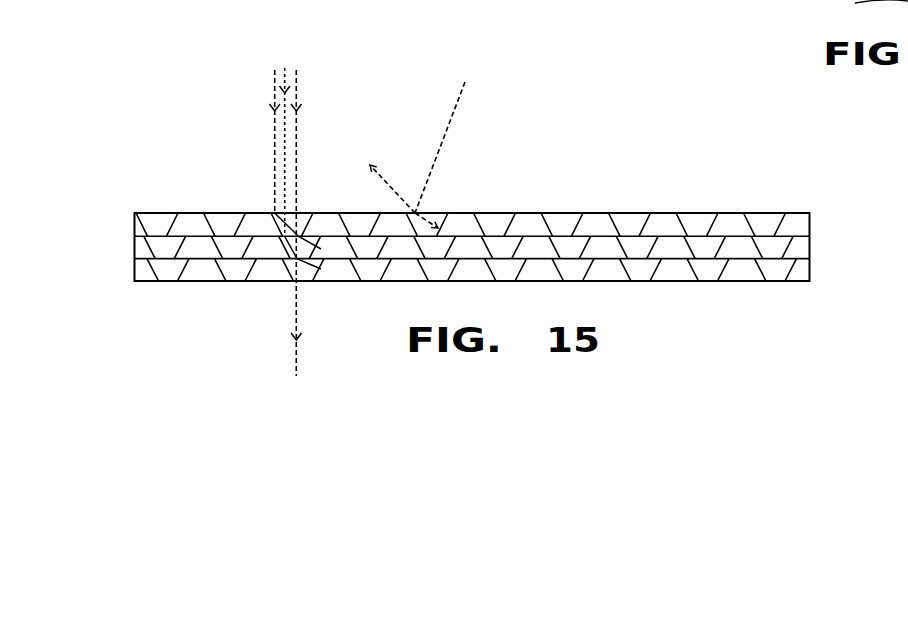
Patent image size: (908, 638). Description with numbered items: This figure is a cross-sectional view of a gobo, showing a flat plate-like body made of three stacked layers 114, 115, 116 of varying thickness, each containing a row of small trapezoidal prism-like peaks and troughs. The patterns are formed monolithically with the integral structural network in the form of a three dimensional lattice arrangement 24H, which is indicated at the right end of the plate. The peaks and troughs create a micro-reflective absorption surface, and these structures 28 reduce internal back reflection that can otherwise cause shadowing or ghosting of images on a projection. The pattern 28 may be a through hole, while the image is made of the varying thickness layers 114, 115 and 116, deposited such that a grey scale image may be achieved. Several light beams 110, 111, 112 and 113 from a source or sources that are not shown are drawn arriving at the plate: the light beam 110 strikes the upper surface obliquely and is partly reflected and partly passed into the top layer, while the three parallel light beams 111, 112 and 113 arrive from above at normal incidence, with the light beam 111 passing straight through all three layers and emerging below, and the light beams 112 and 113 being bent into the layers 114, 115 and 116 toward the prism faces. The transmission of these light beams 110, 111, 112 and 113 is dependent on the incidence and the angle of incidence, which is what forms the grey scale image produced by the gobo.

The three dimensional lattice arrangement 24H is at (514, 208).
The pattern 28 is at (514, 208).
The light beam 110 is at (447, 130).
The light beam 111 is at (298, 93).
The light beam 112 is at (275, 93).
The light beam 113 is at (285, 70).
The varying thickness layer 114 is at (802, 223).
The varying thickness layer 115 is at (802, 248).
The varying thickness layer 116 is at (803, 271).